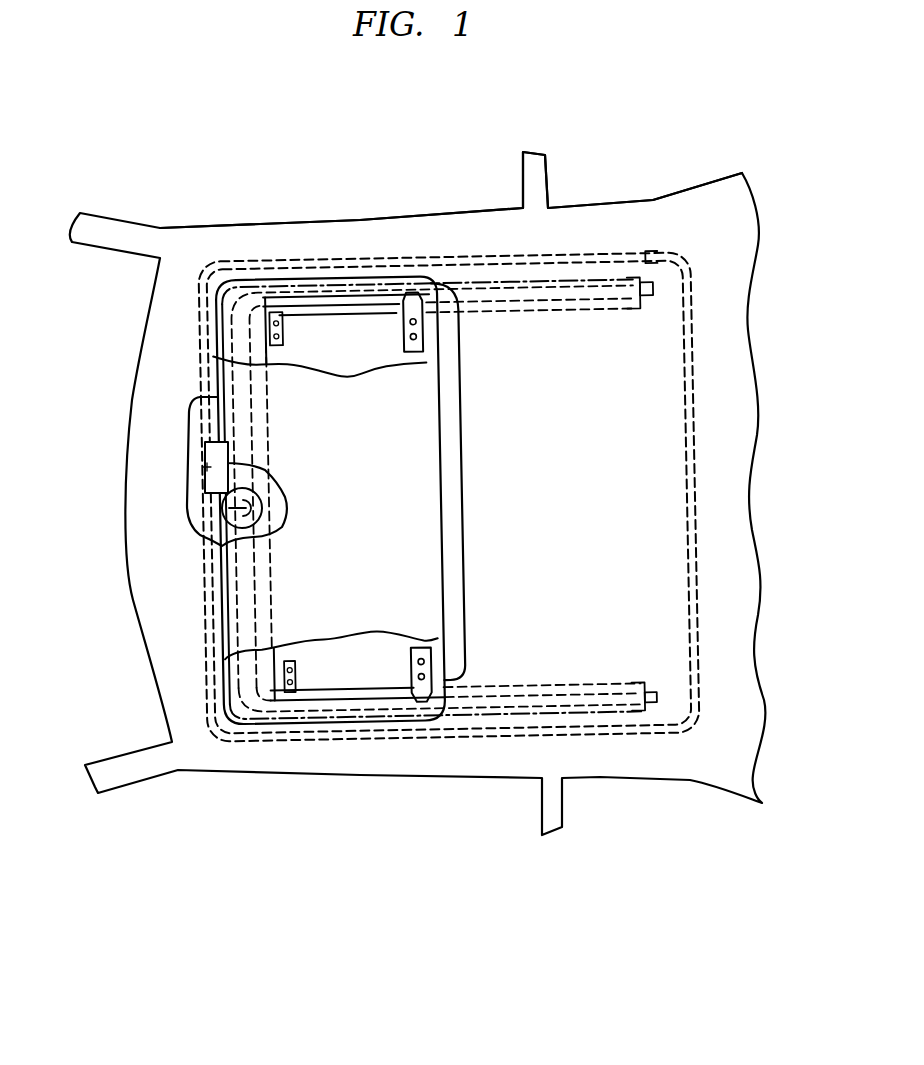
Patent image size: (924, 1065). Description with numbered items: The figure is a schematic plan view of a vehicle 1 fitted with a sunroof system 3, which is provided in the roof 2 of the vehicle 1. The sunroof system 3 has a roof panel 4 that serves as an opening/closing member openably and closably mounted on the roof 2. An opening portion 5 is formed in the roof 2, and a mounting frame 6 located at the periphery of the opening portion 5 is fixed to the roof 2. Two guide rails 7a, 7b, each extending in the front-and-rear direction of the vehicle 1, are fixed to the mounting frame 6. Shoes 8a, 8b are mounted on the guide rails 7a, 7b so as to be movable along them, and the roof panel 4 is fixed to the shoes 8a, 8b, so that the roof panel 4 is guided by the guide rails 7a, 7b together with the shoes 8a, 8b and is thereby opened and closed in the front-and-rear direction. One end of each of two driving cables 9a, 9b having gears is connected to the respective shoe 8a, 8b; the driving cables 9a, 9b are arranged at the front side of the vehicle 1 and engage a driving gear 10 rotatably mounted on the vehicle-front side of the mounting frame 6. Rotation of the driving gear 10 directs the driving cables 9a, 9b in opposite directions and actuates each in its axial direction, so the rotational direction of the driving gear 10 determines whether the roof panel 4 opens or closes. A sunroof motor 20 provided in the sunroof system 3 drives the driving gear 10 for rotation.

The vehicle 1 is at (243, 211).
The roof 2 is at (372, 235).
The sunroof system 3 is at (216, 761).
The roof panel 4 is at (412, 504).
The opening portion 5 is at (389, 670).
The mounting frame 6 is at (650, 256).
The guide rail 7a is at (602, 309).
The guide rail 7b is at (595, 685).
The shoe 8a is at (414, 352).
The shoe 8b is at (420, 647).
The driving cable 9a is at (255, 580).
The driving cable 9b is at (235, 618).
The driving gear 10 is at (192, 510).
The sunroof motor 20 is at (207, 467).